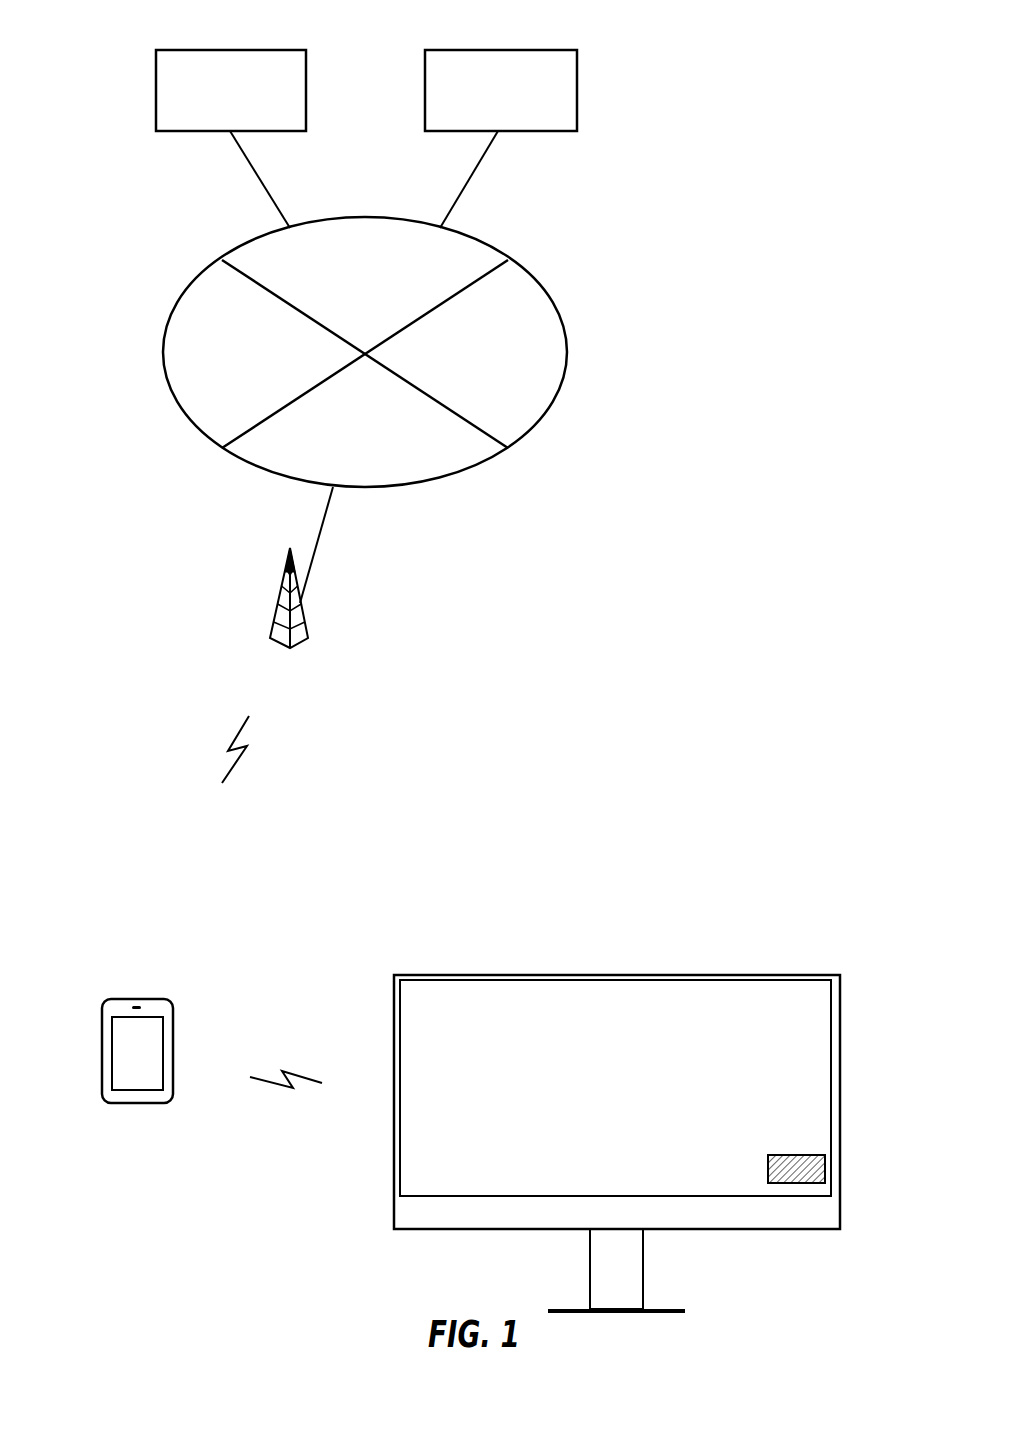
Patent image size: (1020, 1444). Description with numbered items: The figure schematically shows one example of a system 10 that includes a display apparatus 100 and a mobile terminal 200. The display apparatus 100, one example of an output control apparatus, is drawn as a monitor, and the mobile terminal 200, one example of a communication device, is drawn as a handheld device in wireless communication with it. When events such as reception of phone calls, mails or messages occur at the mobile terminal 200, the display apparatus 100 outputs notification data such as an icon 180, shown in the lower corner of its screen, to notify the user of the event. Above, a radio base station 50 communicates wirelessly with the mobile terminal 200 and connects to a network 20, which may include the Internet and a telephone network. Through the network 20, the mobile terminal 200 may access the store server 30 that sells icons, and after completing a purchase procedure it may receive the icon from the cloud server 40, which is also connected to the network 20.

The system 10 is at (71, 884).
The network 20 is at (567, 356).
The store server 30 is at (275, 49).
The cloud server 40 is at (545, 49).
The radio base station 50 is at (275, 608).
The display apparatus 100 is at (805, 958).
The icon 180 is at (825, 1170).
The mobile terminal 200 is at (102, 1030).